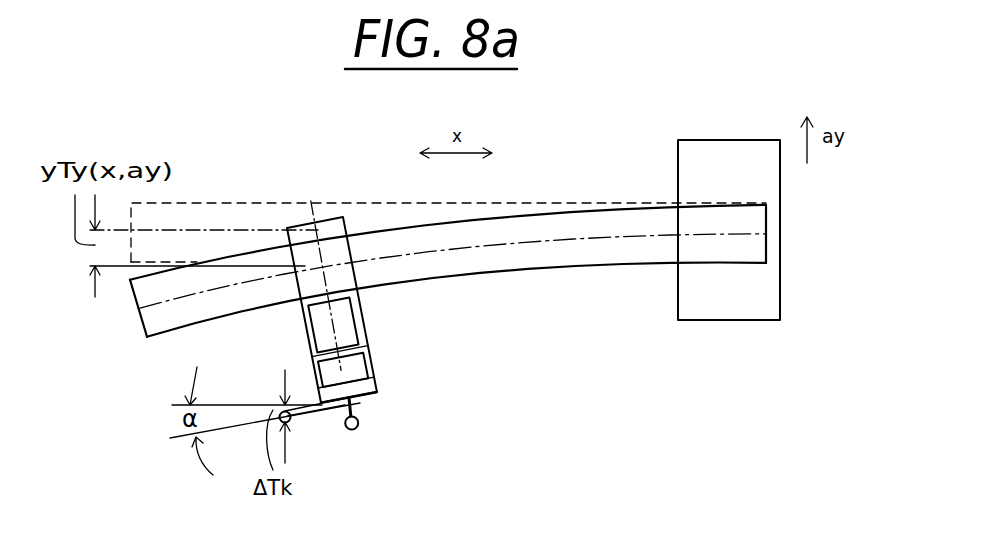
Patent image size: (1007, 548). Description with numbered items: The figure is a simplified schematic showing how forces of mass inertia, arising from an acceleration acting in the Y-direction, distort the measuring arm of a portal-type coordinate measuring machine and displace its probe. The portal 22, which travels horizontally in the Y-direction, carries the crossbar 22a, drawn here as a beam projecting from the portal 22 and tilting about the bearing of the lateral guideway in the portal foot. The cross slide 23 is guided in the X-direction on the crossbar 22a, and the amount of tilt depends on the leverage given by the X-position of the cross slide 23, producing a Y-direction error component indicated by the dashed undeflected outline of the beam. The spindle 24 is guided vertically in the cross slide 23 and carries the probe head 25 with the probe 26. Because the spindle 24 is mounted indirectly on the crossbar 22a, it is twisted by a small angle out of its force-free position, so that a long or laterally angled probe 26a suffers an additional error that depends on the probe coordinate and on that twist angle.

The portal 22 is at (715, 310).
The crossbar 22a is at (552, 263).
The cross slide 23 is at (332, 238).
The spindle 24 is at (345, 325).
The probe head 25 is at (376, 393).
The probe 26 is at (363, 412).
The laterally angled probe 26a is at (315, 423).